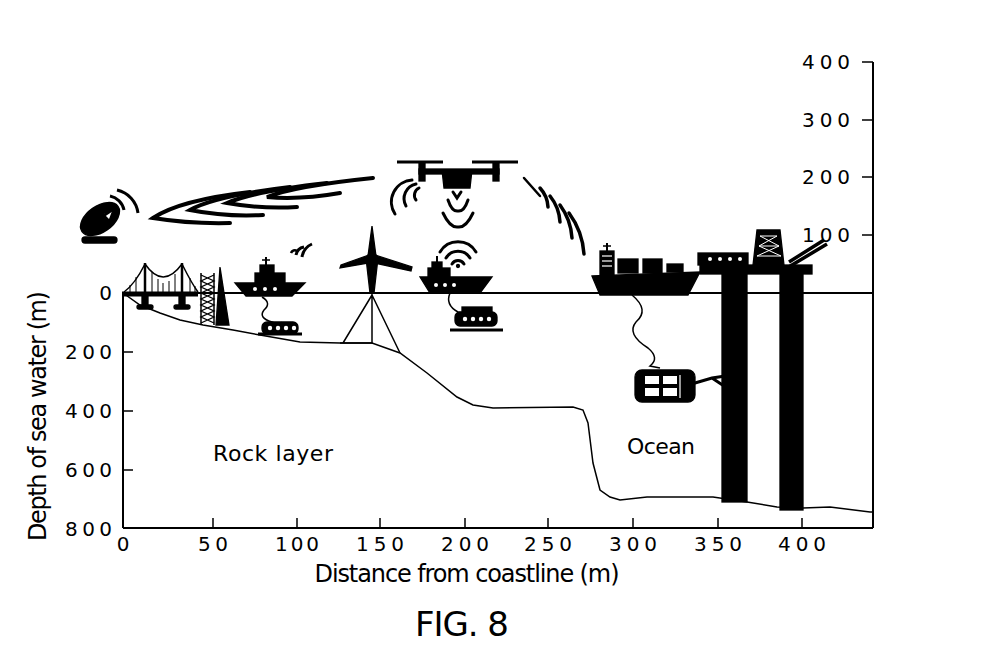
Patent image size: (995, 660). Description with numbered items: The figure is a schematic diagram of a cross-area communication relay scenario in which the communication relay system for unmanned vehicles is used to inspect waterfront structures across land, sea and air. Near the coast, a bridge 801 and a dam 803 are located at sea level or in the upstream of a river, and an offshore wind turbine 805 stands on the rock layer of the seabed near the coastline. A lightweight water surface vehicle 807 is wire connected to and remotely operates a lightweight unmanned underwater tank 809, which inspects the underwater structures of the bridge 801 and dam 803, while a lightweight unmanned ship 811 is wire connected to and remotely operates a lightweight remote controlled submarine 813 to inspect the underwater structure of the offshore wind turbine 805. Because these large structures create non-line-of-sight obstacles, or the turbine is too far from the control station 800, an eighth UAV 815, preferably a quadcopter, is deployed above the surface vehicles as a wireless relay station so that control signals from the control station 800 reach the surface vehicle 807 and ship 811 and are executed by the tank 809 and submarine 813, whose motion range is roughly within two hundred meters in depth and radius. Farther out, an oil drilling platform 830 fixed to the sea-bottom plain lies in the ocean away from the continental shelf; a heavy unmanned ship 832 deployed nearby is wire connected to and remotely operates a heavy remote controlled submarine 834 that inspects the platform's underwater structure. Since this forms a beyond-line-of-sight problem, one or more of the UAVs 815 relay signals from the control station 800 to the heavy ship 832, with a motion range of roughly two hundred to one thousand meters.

The control station 800 is at (106, 202).
The bridge 801 is at (160, 271).
The dam 803 is at (214, 285).
The offshore wind turbine 805 is at (382, 289).
The lightweight water surface vehicle 807 is at (273, 265).
The lightweight unmanned underwater tank 809 is at (296, 315).
The lightweight unmanned ship 811 is at (471, 267).
The lightweight remote controlled submarine 813 is at (476, 330).
The eighth UAV 815 is at (487, 194).
The oil drilling platform 830 is at (762, 356).
The heavy unmanned ship 832 is at (646, 260).
The heavy remote controlled submarine 834 is at (661, 348).